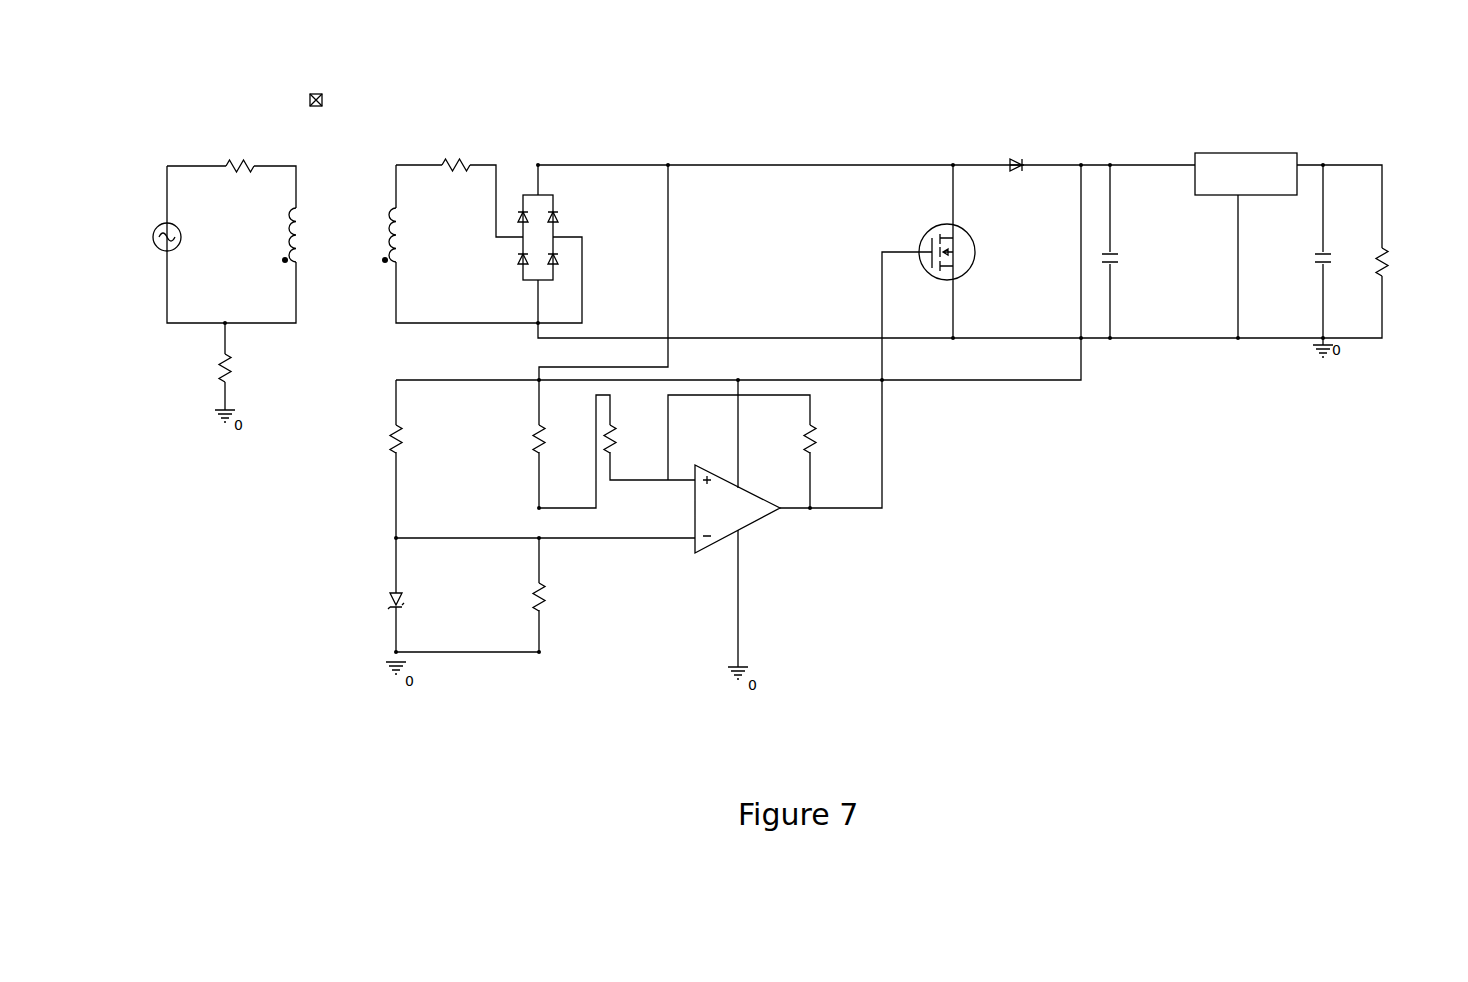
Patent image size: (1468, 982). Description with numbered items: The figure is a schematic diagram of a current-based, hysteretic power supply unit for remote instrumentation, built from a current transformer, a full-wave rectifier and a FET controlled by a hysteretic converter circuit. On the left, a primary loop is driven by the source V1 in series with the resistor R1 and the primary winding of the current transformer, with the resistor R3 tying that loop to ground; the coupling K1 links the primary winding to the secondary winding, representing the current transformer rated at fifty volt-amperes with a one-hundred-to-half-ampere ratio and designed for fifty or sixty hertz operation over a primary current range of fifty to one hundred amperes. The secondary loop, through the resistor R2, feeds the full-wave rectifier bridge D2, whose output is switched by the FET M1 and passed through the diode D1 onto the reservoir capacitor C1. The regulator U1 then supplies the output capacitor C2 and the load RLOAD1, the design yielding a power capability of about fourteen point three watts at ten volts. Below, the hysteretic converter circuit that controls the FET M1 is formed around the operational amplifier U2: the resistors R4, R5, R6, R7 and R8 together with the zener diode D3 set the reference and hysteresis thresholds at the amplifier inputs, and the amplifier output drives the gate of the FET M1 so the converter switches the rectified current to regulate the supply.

The resistor R1 is at (242, 158).
The AC current source V1 is at (136, 240).
The resistor R3 (100G) R3 is at (247, 367).
The coupling K1 is at (346, 115).
The resistor R2 is at (456, 157).
The bridge rectifier D2 is at (531, 223).
The diode D1 is at (1018, 156).
The MOSFET M1 is at (964, 252).
The capacitor C1 is at (1119, 259).
The voltage regulator U1 is at (1246, 166).
The capacitor C2 is at (1333, 259).
The load resistor RLOAD1 is at (1408, 266).
The resistor R4 is at (411, 438).
The resistor R5 is at (554, 438).
The resistor R6 is at (626, 438).
The resistor R7 is at (825, 438).
The resistor R8 is at (554, 596).
The zener diode D3 (Dbreak, Vz = 3.3V) D3 is at (425, 601).
The operational amplifier U2 is at (740, 511).